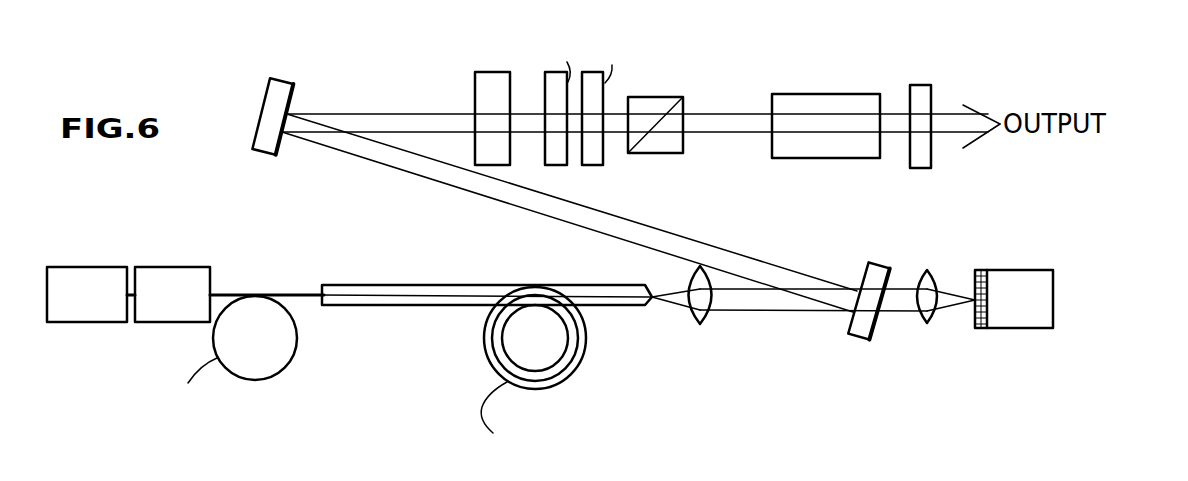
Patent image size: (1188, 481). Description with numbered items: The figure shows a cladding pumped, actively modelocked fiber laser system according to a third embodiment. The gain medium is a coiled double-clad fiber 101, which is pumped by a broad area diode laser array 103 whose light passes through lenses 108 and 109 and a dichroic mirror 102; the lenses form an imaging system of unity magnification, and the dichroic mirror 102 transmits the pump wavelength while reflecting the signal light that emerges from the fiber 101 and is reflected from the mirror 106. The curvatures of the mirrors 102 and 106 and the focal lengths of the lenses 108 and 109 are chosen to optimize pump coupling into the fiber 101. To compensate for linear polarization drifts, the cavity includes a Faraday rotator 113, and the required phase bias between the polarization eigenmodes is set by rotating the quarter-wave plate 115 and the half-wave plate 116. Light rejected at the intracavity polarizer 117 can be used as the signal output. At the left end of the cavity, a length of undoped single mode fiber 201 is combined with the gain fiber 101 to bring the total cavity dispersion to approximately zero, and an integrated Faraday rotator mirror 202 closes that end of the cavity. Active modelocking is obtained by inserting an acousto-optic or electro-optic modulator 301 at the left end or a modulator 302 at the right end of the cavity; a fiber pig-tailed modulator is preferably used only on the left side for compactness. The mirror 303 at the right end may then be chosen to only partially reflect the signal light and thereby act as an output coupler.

The double-clad fiber 101 is at (583, 358).
The dichroic mirror 102 is at (872, 340).
The diode laser array 103 is at (1000, 328).
The mirror 106 is at (284, 78).
The lens 108 is at (930, 323).
The lens 109 is at (700, 325).
The Faraday rotator 113 is at (492, 72).
The quarter-wave plate 115 is at (557, 165).
The half-wave plate 116 is at (600, 165).
The intracavity polarizer 117 is at (677, 153).
The single mode fiber 201 is at (293, 361).
The Faraday rotator mirror 202 is at (55, 323).
The modulator 301 is at (152, 267).
The modulator 302 is at (778, 94).
The mirror 303 is at (915, 168).